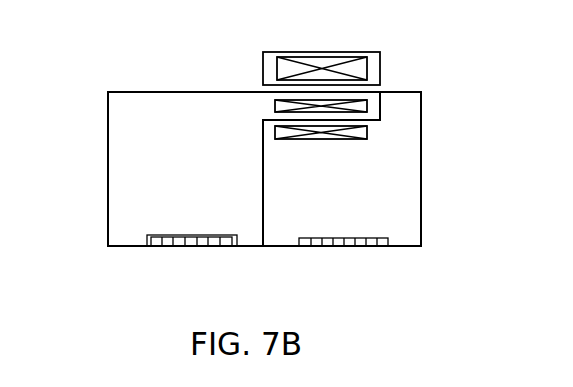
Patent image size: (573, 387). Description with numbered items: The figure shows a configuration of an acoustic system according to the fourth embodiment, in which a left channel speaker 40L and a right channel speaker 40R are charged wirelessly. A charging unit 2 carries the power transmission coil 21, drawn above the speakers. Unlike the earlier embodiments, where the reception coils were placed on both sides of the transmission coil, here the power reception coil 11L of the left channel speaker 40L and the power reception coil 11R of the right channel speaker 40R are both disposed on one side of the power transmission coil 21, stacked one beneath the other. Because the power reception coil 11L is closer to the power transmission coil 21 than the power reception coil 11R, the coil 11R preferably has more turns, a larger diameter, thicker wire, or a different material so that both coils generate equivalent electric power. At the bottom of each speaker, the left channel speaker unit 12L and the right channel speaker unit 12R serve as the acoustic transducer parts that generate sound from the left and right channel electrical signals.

The coil unit 2 is at (322, 52).
The power transmission coil 21 is at (348, 52).
The left channel speaker 40L is at (181, 92).
The right channel speaker 40R is at (400, 92).
The power reception coil 11L is at (275, 105).
The power reception coil 11R is at (320, 140).
The left channel speaker unit 12L is at (192, 247).
The right channel speaker unit 12R is at (343, 247).